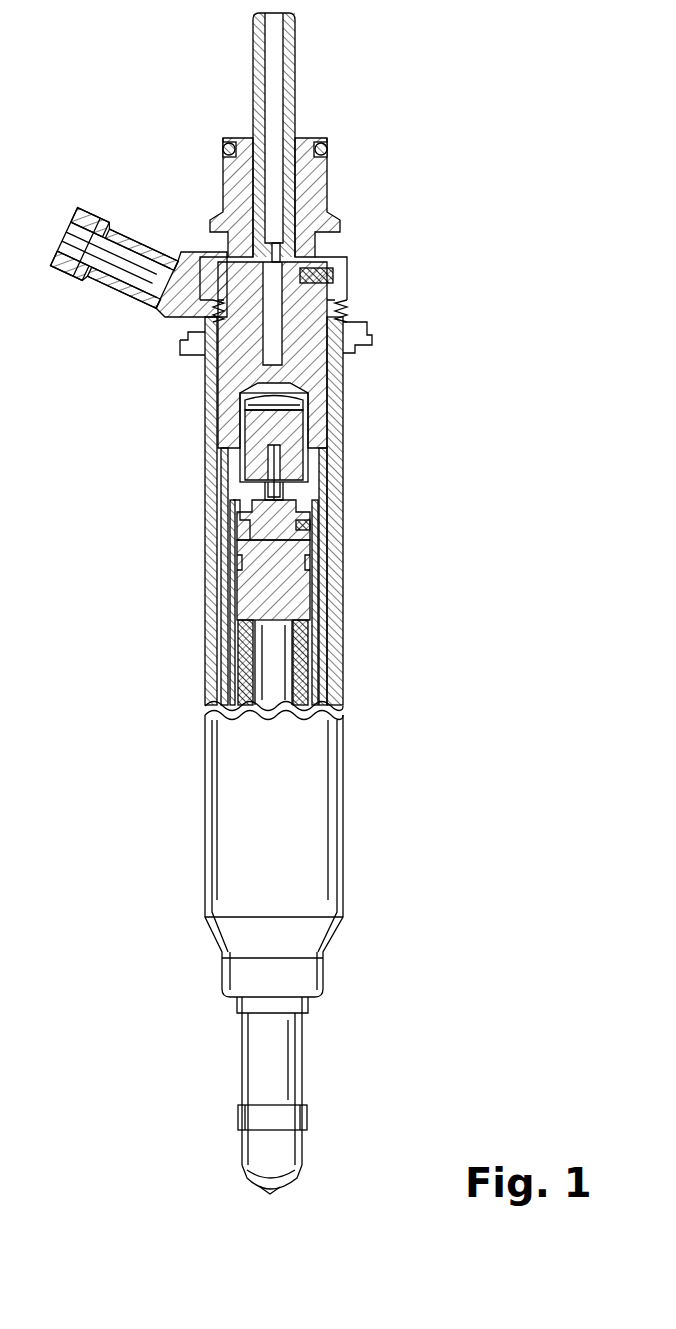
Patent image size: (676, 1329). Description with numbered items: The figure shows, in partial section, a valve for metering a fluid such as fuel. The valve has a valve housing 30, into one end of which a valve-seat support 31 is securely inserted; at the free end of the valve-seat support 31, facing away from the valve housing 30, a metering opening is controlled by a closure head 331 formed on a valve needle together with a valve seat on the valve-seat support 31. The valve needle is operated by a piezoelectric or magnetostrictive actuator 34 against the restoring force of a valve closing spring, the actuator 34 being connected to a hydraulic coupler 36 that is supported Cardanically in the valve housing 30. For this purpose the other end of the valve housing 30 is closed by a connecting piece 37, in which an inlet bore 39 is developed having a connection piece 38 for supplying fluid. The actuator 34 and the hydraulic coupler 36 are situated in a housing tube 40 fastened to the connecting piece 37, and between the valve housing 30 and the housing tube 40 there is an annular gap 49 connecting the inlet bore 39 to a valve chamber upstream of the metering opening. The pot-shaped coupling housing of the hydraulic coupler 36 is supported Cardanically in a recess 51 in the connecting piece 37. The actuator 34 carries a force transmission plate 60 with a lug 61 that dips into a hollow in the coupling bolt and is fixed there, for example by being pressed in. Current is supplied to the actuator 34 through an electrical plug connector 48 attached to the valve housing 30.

The valve housing 30 is at (337, 420).
The valve-seat support 31 is at (277, 1080).
The closure head 331 is at (268, 1192).
The piezoelectric actuator or magnetostrictive actuator 34 is at (298, 665).
The hydraulic coupler 36 is at (305, 445).
The connecting piece 37 is at (310, 297).
The connection piece 38 is at (290, 67).
The inlet bore 39 is at (272, 313).
The housing tube 40 is at (322, 550).
The electrical plug connector 48 is at (112, 245).
The annular gap 49 is at (327, 585).
The recess 51 is at (277, 393).
The force transmission plate 60 is at (272, 610).
The lug 61 is at (272, 512).